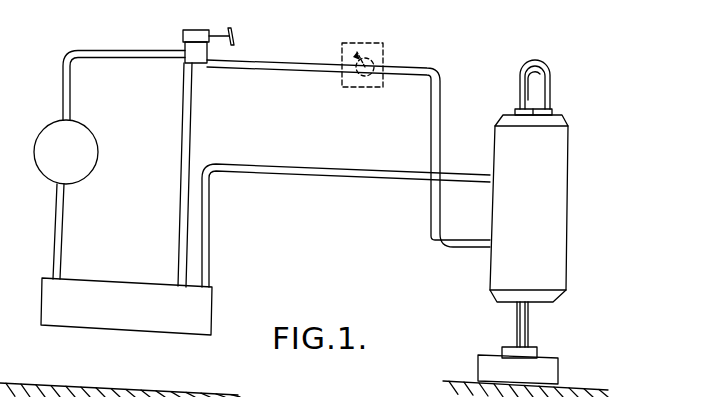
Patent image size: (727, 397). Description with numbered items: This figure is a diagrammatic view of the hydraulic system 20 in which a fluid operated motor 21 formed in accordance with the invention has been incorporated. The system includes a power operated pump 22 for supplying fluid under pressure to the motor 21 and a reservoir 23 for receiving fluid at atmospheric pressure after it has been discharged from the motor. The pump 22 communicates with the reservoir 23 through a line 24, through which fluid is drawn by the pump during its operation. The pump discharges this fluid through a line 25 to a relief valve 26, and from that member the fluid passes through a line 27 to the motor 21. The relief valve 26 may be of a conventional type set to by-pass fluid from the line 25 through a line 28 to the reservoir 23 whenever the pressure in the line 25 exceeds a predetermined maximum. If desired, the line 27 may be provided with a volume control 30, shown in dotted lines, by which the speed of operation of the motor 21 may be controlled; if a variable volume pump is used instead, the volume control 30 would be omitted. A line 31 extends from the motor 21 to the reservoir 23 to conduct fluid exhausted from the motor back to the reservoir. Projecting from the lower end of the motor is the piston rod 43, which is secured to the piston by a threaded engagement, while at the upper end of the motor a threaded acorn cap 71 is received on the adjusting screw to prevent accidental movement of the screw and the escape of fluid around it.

The hydraulic system 20 is at (266, 57).
The fluid operated motor 21 is at (552, 187).
The power operated pump 22 is at (66, 152).
The reservoir 23 is at (138, 320).
The line 24 is at (63, 226).
The line 25 is at (112, 58).
The relief valve 26 is at (193, 52).
The line 27 is at (243, 65).
The line 28 is at (187, 153).
The volume control 30 is at (387, 59).
The line 31 is at (362, 173).
The piston rod 43 is at (530, 320).
The acorn cap 71 is at (552, 89).